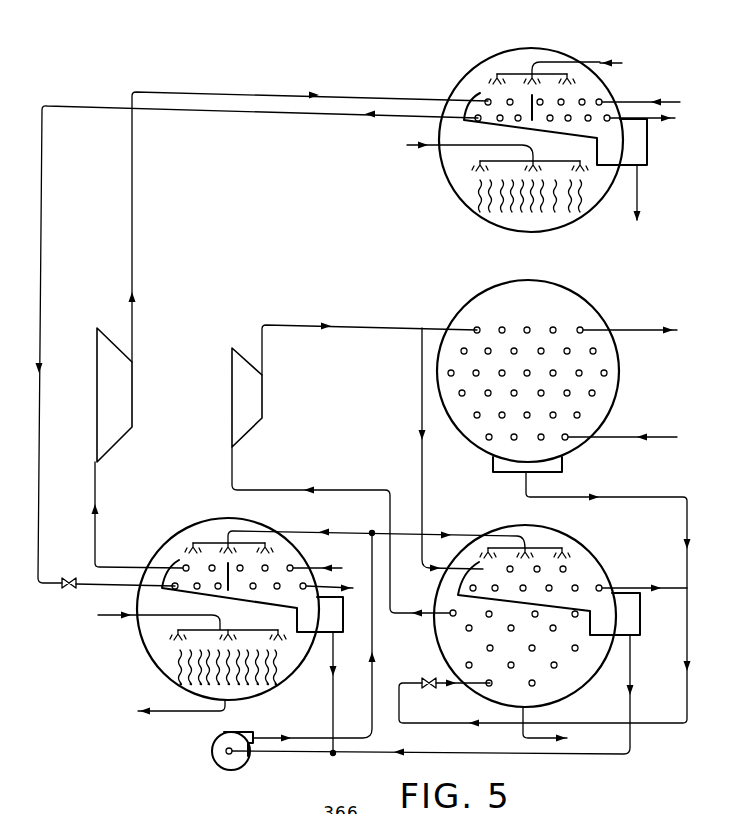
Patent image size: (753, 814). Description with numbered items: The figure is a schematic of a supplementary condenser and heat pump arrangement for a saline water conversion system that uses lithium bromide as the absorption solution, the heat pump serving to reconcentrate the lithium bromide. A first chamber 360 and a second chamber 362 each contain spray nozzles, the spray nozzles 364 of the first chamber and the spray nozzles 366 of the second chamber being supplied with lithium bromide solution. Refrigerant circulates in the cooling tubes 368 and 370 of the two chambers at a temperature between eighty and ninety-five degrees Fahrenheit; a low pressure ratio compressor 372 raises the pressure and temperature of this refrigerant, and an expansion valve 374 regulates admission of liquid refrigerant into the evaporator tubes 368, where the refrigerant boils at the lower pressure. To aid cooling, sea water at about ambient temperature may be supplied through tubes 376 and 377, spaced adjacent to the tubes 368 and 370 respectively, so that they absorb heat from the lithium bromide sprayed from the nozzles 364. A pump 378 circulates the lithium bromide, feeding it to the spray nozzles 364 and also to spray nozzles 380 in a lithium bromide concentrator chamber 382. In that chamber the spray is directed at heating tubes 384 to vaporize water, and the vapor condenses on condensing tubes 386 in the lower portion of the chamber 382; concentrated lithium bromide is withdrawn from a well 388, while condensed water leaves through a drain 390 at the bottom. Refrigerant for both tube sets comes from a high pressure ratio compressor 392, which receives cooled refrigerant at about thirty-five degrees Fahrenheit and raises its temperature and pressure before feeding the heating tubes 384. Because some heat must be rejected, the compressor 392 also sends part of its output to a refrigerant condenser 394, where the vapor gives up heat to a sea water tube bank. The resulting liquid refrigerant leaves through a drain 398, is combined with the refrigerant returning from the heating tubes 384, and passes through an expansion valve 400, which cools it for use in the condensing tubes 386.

The first chamber 360 is at (175, 534).
The second chamber 362 is at (455, 192).
The spray nozzles 364 is at (213, 542).
The spray nozzles 366 is at (596, 62).
The cooling tubes 368 is at (196, 589).
The cooling tubes 370 is at (496, 121).
The low pressure ratio compressor 372 is at (112, 431).
The expansion valve 374 is at (68, 577).
The sea water tubes 376 is at (254, 589).
The sea water tubes 377 is at (569, 122).
The pump 378 is at (213, 757).
The spray nozzles 380 is at (542, 547).
The lithium bromide concentrator chamber 382 is at (495, 530).
The heating tubes 384 is at (590, 572).
The condensing tubes 386 is at (452, 617).
The well 388 is at (633, 662).
The drain 390 is at (527, 716).
The high pressure ratio compressor 392 is at (247, 425).
The refrigerant condenser 394 is at (465, 305).
The drain 398 is at (633, 497).
The expansion valve 400 is at (426, 678).